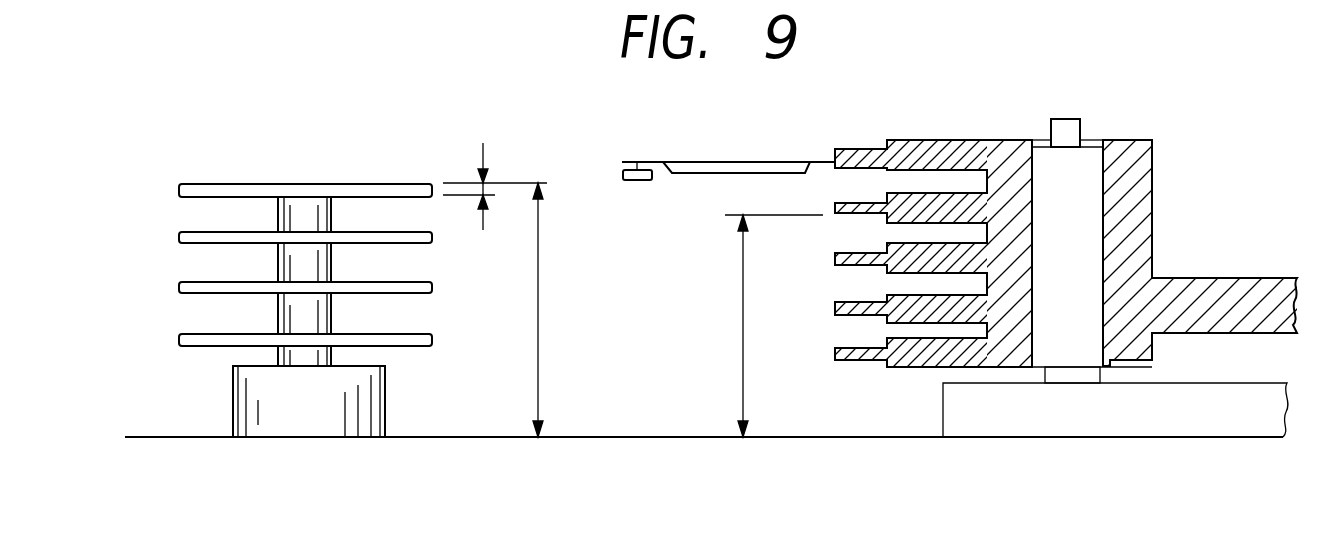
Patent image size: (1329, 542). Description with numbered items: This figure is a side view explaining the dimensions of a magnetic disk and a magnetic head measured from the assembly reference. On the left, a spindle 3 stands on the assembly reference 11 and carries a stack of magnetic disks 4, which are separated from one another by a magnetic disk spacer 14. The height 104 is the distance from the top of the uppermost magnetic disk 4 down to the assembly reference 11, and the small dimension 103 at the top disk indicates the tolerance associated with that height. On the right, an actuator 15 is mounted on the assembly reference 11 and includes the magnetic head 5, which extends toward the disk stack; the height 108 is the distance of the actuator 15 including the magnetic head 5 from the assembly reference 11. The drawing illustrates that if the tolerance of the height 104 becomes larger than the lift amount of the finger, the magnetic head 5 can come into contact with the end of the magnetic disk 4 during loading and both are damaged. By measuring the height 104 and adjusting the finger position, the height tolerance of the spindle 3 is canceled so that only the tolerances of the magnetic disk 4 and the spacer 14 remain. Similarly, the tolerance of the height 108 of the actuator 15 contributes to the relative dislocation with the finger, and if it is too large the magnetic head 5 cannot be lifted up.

The spindle 3 is at (243, 397).
The magnetic disk 4 is at (357, 187).
The magnetic head 5 is at (645, 180).
The assembly reference 11 is at (689, 440).
The magnetic disk spacer 14 is at (282, 215).
The actuator 15 is at (927, 142).
The tolerance of the height 103 is at (485, 190).
The height from the top of the magnetic disk to the assembly reference 104 is at (538, 335).
The height of the actuator 108 is at (743, 305).